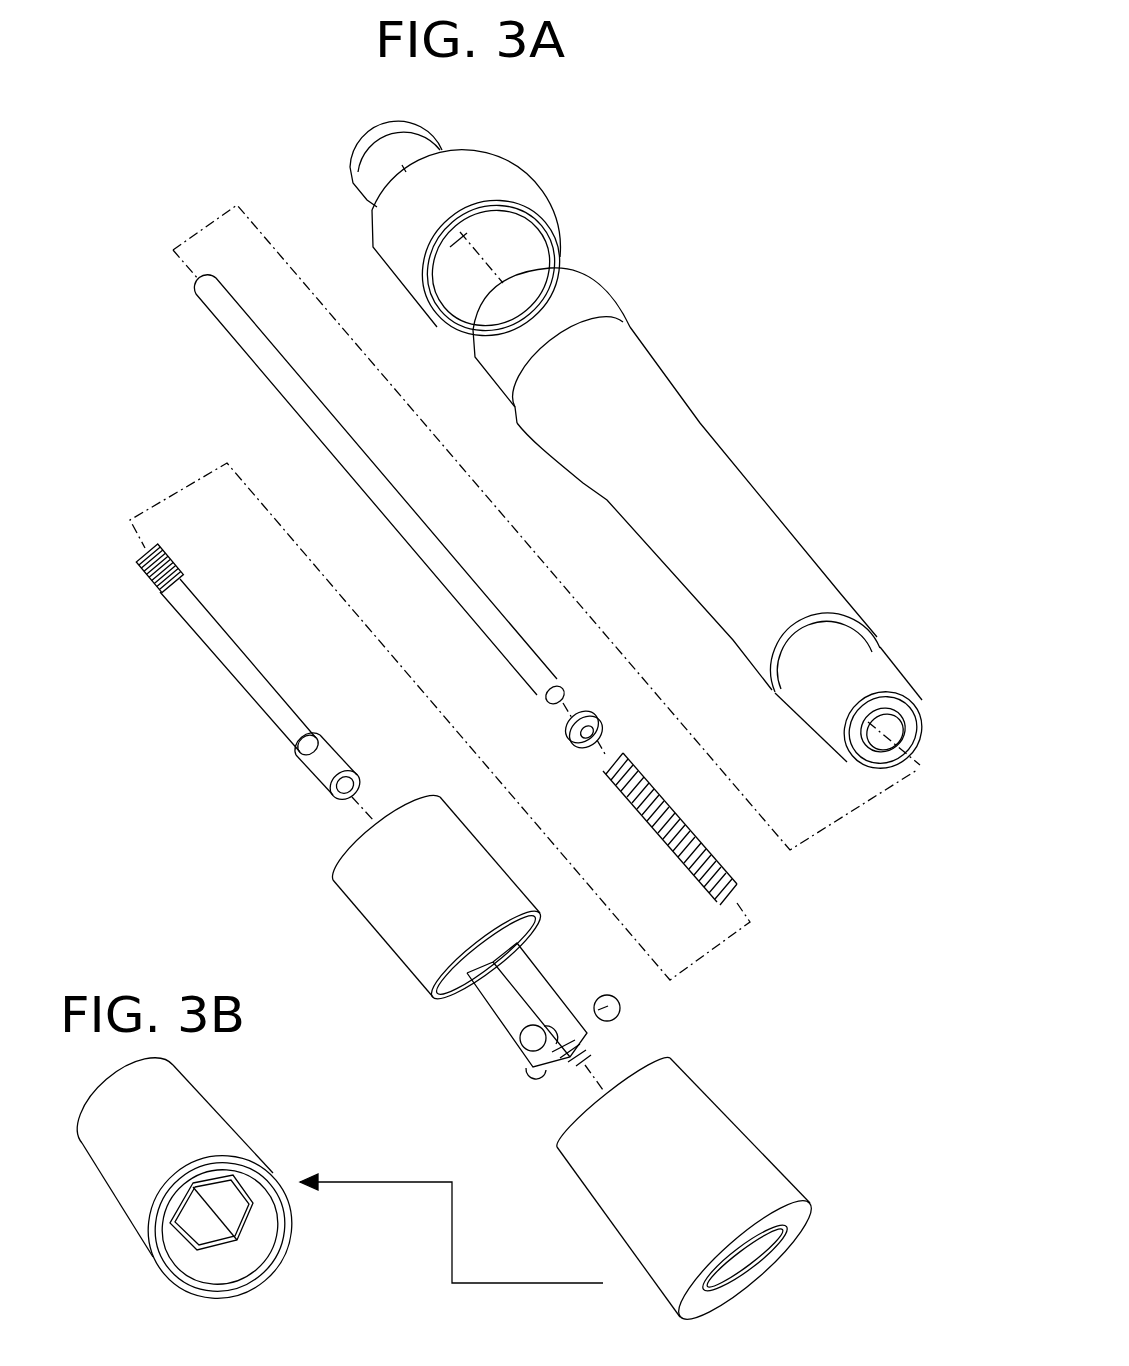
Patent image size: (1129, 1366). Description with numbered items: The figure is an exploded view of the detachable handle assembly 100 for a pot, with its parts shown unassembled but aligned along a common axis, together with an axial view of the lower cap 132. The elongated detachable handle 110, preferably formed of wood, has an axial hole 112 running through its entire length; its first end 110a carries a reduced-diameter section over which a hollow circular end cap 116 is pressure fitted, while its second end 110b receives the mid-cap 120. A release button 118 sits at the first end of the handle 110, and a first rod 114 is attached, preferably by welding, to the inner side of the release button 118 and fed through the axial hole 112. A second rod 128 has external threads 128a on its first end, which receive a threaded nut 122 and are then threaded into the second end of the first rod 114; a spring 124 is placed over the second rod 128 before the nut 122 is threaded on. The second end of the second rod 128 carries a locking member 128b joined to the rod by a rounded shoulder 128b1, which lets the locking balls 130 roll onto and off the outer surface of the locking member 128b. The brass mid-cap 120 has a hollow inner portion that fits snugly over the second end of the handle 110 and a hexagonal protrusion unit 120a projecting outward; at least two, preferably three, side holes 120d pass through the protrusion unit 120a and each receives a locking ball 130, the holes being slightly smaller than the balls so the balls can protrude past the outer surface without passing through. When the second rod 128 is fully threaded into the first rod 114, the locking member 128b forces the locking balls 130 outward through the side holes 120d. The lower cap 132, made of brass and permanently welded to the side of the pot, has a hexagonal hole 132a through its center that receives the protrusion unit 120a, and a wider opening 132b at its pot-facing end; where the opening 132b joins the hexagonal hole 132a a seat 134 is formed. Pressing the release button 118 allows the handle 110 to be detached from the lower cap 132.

In FIG. 3A, the detachable handle assembly 100 is at (745, 195).
In FIG. 3A, the detachable handle 110 is at (745, 437).
In FIG. 3A, the handle first end 110a is at (622, 300).
In FIG. 3A, the handle second end 110b is at (890, 640).
In FIG. 3A, the axial hole 112 is at (877, 743).
In FIG. 3A, the first rod 114 is at (295, 435).
In FIG. 3A, the circular end cap 116 is at (538, 188).
In FIG. 3A, the release button 118 is at (345, 150).
In FIG. 3A, the mid-cap 120 is at (358, 918).
In FIG. 3A, the protrusion unit 120a is at (496, 1023).
In FIG. 3A, the side holes 120d is at (548, 1022).
In FIG. 3A, the threaded nut 122 is at (562, 735).
In FIG. 3A, the spring 124 is at (745, 885).
In FIG. 3A, the second rod 128 is at (235, 690).
In FIG. 3A, the external threads 128a is at (143, 578).
In FIG. 3A, the locking member 128b is at (305, 782).
In FIG. 3A, the rounded shoulder 128b1 is at (290, 753).
In FIG. 3A, the locking balls 130 is at (630, 1010).
In FIG. 3A, the lower cap 132 is at (728, 1143).
In FIG. 3B, the lower cap 132 is at (117, 1170).
In FIG. 3A, the hexagonal hole 132a is at (786, 1231).
In FIG. 3B, the hexagonal hole 132a is at (247, 1197).
In FIG. 3B, the opening 132b is at (262, 1260).
In FIG. 3B, the seat 134 is at (197, 1260).